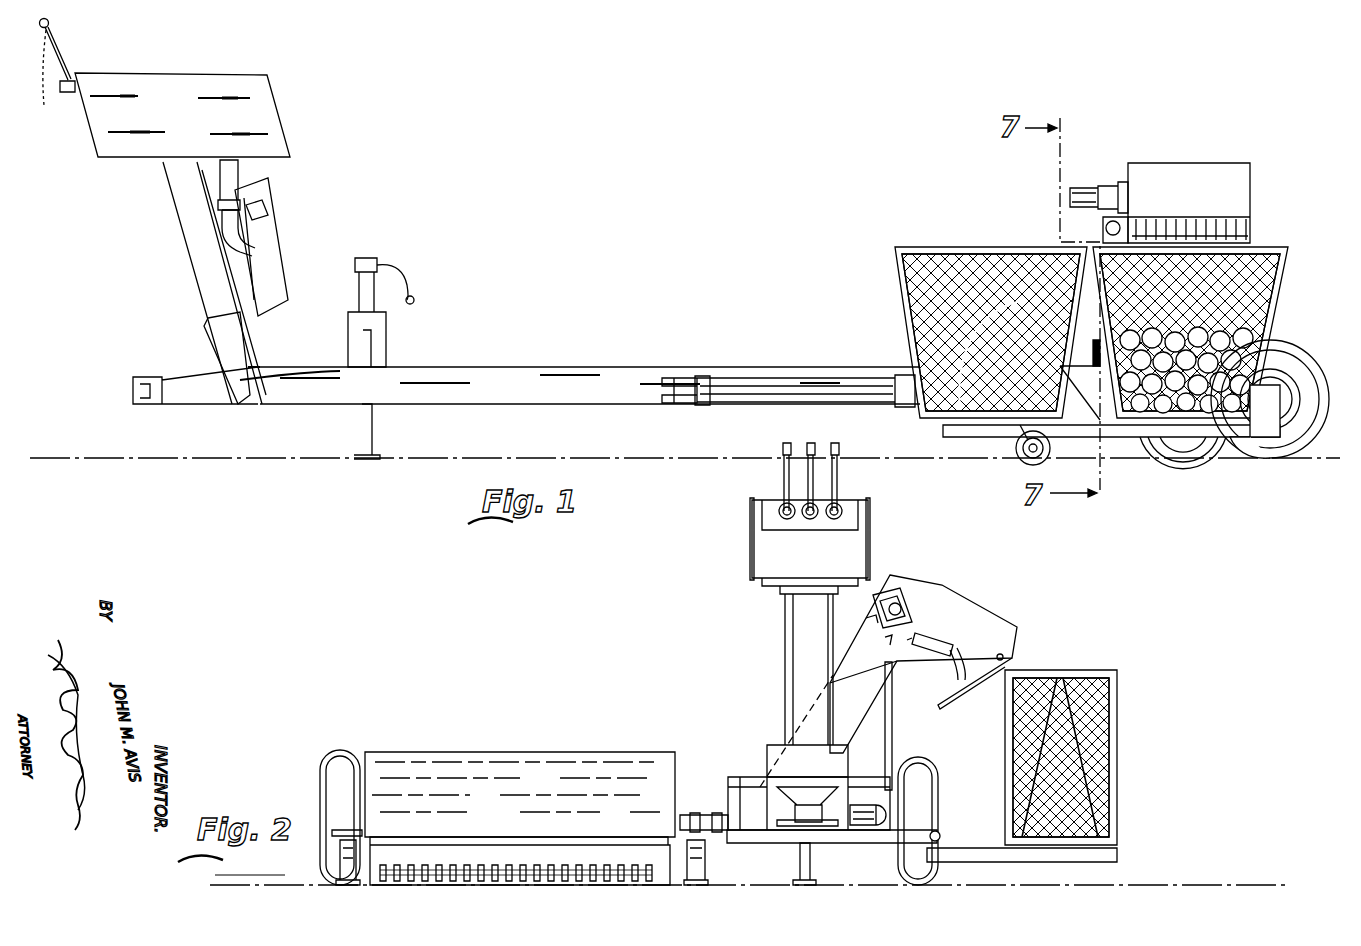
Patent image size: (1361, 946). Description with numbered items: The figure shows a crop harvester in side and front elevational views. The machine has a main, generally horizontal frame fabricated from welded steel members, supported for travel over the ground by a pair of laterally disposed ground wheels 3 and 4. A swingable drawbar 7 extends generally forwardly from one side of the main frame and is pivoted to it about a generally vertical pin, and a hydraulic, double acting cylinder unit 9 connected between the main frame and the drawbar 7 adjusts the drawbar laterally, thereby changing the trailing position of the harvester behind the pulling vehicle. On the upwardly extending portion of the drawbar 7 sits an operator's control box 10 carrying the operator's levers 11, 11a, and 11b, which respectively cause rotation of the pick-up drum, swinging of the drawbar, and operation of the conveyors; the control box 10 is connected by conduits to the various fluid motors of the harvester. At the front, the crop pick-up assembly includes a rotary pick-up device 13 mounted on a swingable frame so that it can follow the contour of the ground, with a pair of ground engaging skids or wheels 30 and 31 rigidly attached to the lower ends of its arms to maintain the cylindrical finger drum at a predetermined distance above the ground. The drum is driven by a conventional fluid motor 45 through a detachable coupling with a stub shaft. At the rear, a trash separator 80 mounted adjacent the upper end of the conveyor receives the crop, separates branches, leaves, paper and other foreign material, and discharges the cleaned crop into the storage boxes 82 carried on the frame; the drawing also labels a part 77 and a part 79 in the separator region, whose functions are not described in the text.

In FIG. 1, the ground wheel 3 is at (1320, 360).
In FIG. 2, the ground wheel 3 is at (338, 750).
In FIG. 1, the ground wheel 4 is at (1183, 456).
In FIG. 2, the ground wheel 4 is at (928, 774).
In FIG. 1, the swingable drawbar 7 is at (533, 370).
In FIG. 2, the swingable drawbar 7 is at (829, 813).
In FIG. 1, the hydraulic double acting cylinder unit 9 is at (792, 385).
In FIG. 2, the hydraulic double acting cylinder unit 9 is at (858, 803).
In FIG. 1, the operator's control box 10 is at (190, 84).
In FIG. 2, the operator's control box 10 is at (871, 543).
In FIG. 1, the operator's lever 11 is at (56, 77).
In FIG. 2, the operator's lever 11 is at (840, 462).
In FIG. 2, the operator's lever 11a is at (817, 450).
In FIG. 2, the operator's lever 11b is at (785, 446).
In FIG. 1, the rotary pick-up device 13 is at (905, 330).
In FIG. 2, the rotary pick-up device 13 is at (518, 745).
In FIG. 2, the ground engaging skid or wheel 30 is at (705, 875).
In FIG. 2, the ground engaging skid or wheel 31 is at (338, 855).
In FIG. 2, the fluid motor 45 is at (712, 818).
In FIG. 1, the motor shaft 77 is at (1085, 188).
In FIG. 2, the motor shaft 77 is at (905, 600).
In FIG. 2, the support bar 79 is at (892, 725).
In FIG. 1, the trash separator 80 is at (1258, 190).
In FIG. 2, the trash separator 80 is at (988, 604).
In FIG. 1, the storage box 82 is at (895, 250).
In FIG. 2, the storage box 82 is at (1118, 735).